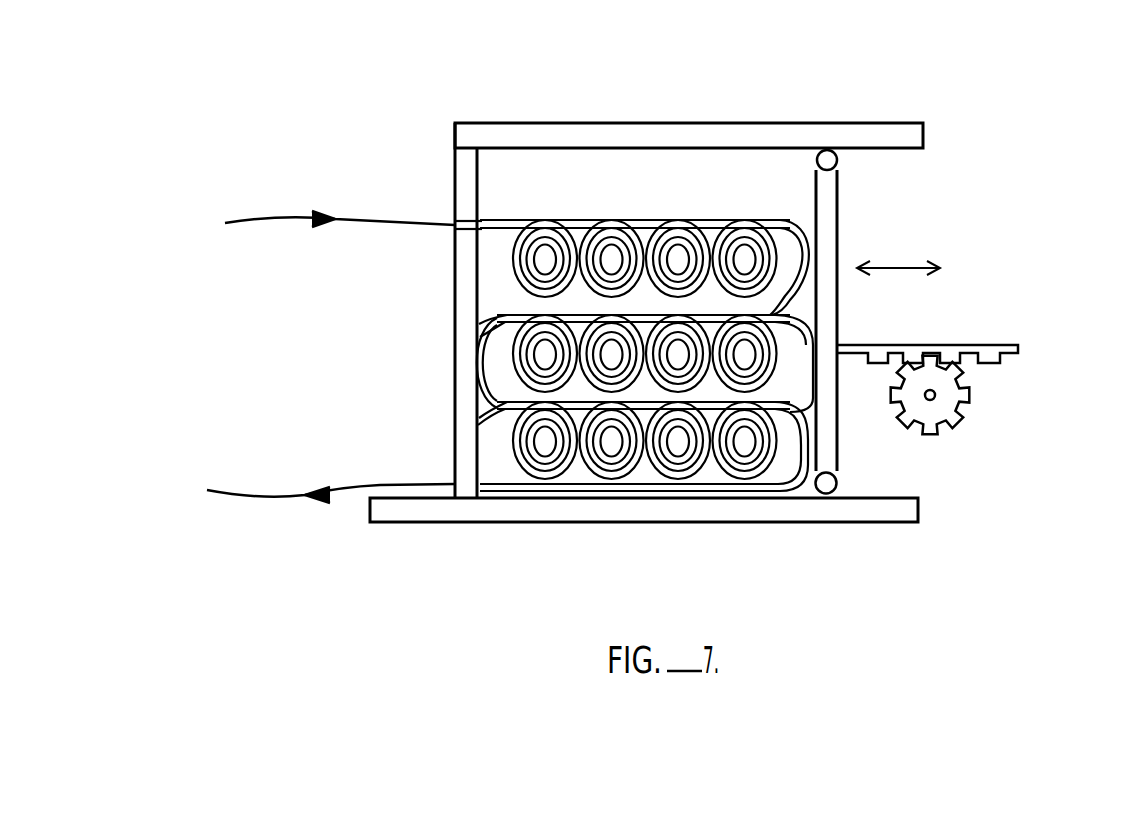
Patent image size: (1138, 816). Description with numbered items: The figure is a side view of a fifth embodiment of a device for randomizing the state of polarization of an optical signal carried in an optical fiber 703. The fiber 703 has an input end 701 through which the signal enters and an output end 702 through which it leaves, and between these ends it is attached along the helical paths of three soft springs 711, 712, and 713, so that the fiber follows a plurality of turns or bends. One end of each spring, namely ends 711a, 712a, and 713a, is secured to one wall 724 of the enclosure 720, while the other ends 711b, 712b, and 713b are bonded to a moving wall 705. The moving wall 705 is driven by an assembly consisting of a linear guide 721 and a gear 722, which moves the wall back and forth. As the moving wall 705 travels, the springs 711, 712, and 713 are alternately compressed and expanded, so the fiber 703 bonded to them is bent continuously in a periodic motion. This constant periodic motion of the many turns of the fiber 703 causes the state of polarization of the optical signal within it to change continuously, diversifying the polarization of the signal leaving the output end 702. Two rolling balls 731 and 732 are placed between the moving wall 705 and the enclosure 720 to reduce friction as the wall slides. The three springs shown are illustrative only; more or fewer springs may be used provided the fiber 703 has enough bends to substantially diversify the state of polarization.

The input end 701 is at (340, 200).
The output end 702 is at (328, 475).
The optical fiber 703 is at (480, 372).
The moving wall 705 is at (840, 213).
The soft spring 711 is at (591, 222).
The spring end 711a is at (517, 227).
The spring end 711b is at (818, 238).
The soft spring 712 is at (493, 315).
The spring end 712a is at (482, 337).
The spring end 712b is at (817, 333).
The soft spring 713 is at (498, 396).
The spring end 713a is at (477, 425).
The spring end 713b is at (817, 437).
The enclosure 720 is at (500, 122).
The linear guide 721 is at (1000, 345).
The gear 722 is at (957, 423).
The wall 724 is at (453, 153).
The rolling ball 731 is at (829, 152).
The rolling ball 732 is at (820, 488).